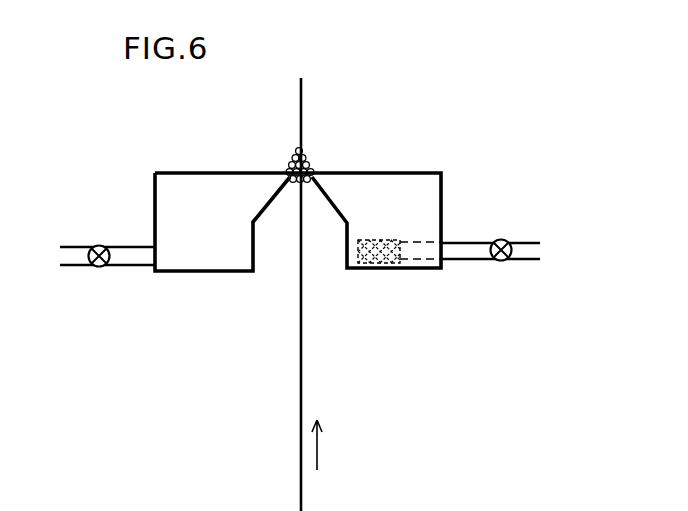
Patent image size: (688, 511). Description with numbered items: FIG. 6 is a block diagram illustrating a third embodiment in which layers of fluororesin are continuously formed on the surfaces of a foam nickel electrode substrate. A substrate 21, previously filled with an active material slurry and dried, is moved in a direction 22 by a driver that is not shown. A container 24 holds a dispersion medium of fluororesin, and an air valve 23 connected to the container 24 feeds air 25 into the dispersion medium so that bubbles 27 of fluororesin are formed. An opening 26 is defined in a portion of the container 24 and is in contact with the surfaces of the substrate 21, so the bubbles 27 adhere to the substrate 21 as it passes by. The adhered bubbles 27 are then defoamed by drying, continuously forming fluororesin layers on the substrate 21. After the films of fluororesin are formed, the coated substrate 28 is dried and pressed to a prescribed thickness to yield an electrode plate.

The substrate 21 is at (302, 321).
The direction 22 is at (318, 450).
The air valve 23 is at (501, 261).
The container 24 is at (410, 172).
The air 25 is at (577, 249).
The opening 26 is at (312, 163).
The bubbles 27 is at (294, 182).
The substrate 28 is at (302, 95).